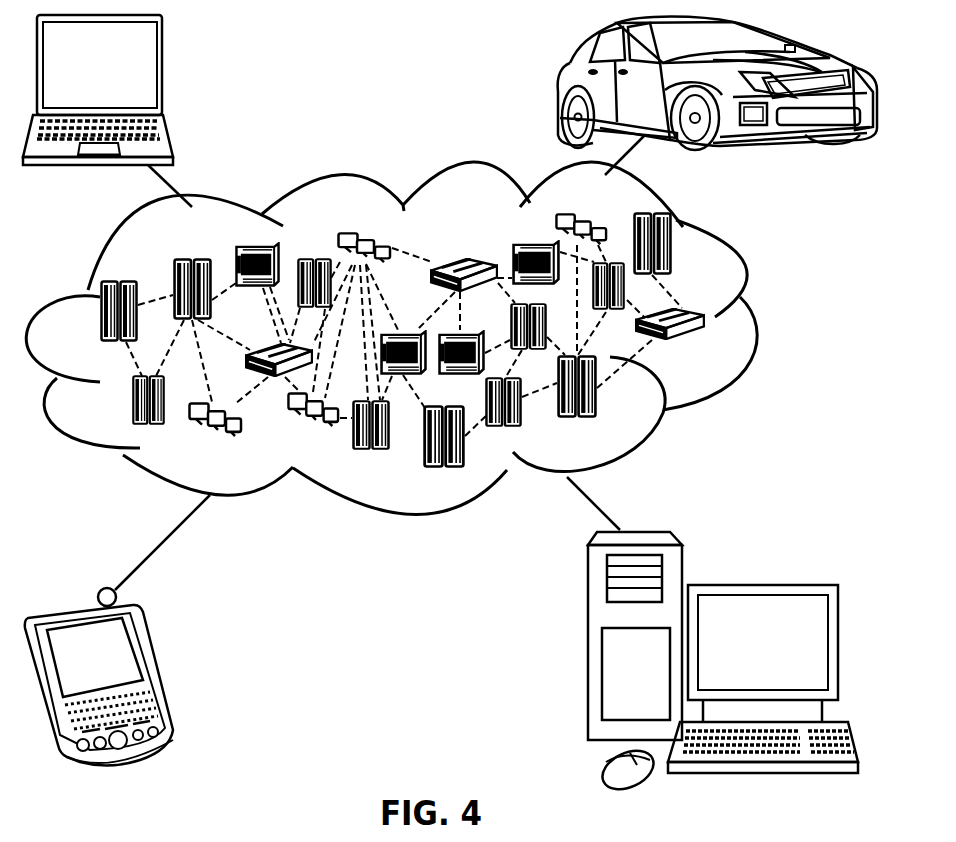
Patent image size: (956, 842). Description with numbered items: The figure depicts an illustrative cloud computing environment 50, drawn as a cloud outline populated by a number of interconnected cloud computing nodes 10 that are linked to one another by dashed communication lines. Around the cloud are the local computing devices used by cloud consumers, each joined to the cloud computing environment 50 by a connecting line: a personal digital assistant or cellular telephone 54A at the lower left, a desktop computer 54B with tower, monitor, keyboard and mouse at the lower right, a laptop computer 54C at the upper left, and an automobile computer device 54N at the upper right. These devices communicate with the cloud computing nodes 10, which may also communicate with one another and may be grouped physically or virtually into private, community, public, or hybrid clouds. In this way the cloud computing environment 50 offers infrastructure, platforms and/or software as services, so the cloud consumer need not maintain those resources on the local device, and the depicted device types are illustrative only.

The cloud computing node 10 is at (712, 350).
The cloud computing environment 50 is at (760, 323).
The personal digital assistant or cellular telephone 54A is at (153, 670).
The desktop computer 54B is at (760, 583).
The laptop computer 54C is at (162, 72).
The automobile computer device 54N is at (560, 86).